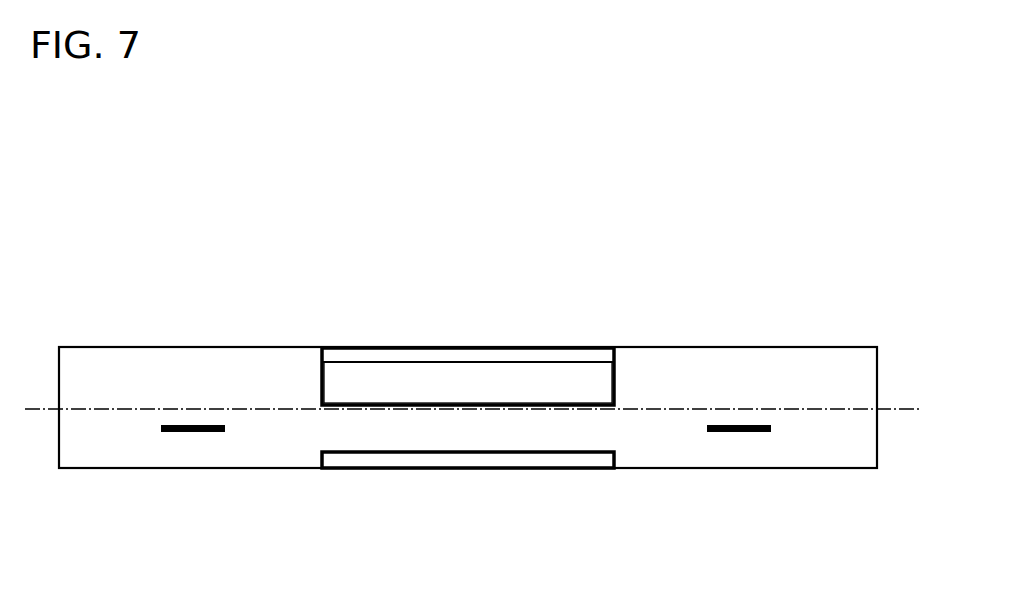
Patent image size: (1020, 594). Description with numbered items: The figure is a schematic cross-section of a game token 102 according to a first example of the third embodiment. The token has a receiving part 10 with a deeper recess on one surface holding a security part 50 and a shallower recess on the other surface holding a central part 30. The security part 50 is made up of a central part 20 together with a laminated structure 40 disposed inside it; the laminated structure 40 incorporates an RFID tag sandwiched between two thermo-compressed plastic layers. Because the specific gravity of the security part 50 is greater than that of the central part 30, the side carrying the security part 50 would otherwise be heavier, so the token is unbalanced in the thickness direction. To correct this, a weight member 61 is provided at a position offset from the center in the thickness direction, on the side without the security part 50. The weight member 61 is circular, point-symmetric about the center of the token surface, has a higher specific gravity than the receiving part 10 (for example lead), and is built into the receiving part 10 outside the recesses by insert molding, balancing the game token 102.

The game token 102 is at (788, 347).
The receiving part 10 is at (180, 347).
The security part 50 is at (368, 346).
The laminated structure 40 is at (528, 362).
The central part 20 is at (460, 347).
The central part 30 is at (470, 469).
The weight member 61 is at (196, 433).